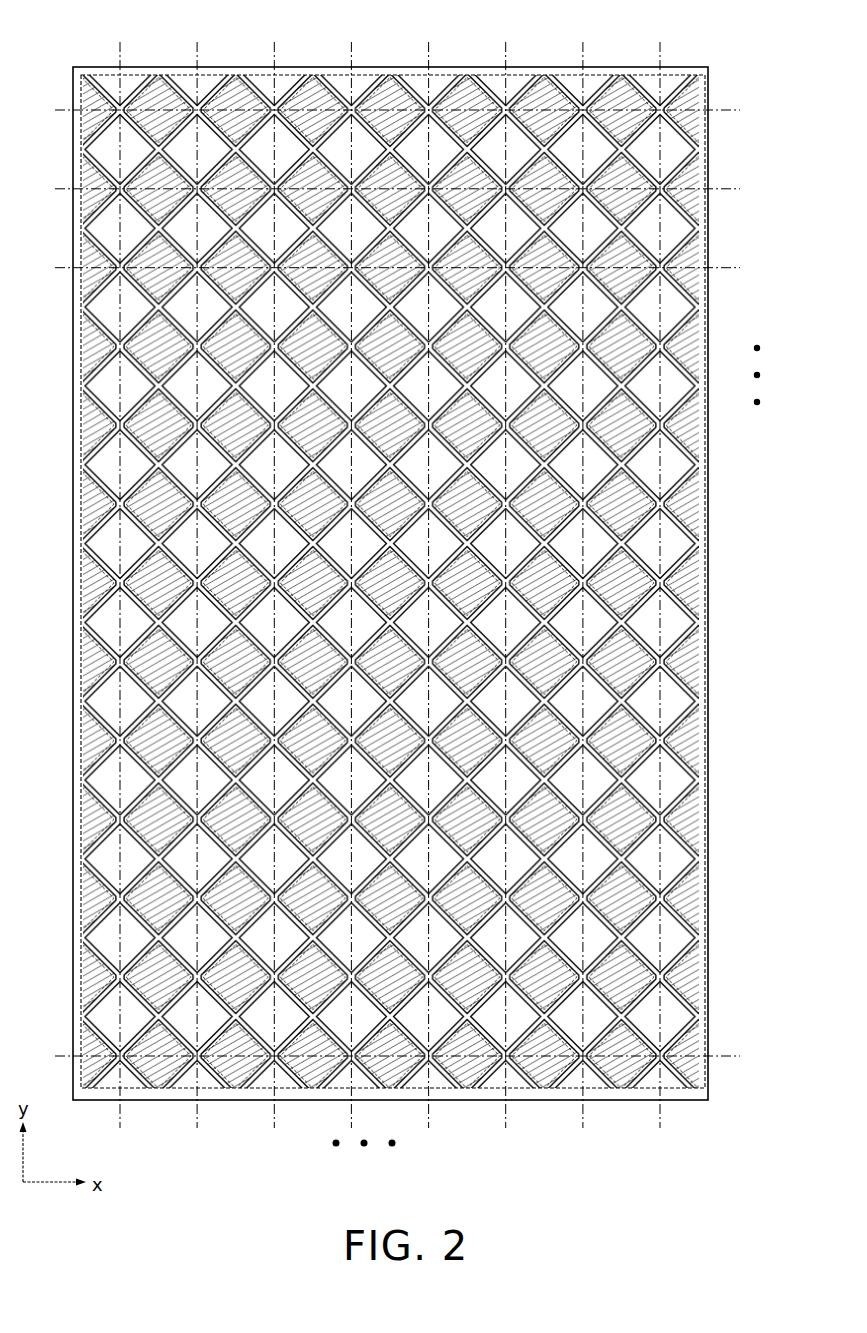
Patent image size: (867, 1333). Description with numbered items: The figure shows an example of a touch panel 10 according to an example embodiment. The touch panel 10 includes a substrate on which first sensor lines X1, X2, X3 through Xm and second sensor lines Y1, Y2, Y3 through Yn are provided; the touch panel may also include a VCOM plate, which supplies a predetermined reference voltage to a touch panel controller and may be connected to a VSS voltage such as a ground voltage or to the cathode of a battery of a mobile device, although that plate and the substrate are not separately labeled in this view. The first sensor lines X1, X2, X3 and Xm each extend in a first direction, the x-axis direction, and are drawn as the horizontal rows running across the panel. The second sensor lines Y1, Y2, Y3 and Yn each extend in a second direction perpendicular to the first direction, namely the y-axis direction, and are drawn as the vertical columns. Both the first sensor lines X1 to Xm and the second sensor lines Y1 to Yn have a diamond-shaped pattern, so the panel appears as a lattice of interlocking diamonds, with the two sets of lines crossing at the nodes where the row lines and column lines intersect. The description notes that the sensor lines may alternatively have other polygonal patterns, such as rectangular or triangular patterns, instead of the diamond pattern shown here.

The touch panel 10 is at (178, 23).
The first sensor line X1 is at (414, 110).
The first sensor line X2 is at (414, 189).
The first sensor line X3 is at (414, 268).
The first sensor line Xm is at (417, 1056).
The second sensor line Y1 is at (119, 599).
The second sensor line Y2 is at (196, 599).
The second sensor line Y3 is at (273, 599).
The second sensor line Yn is at (657, 599).